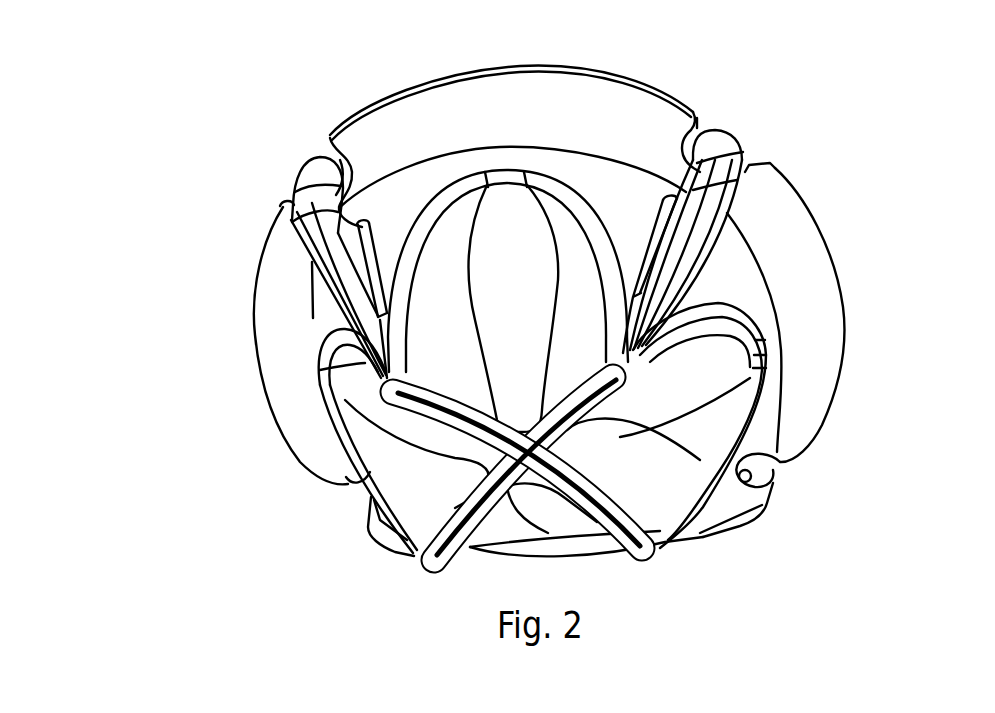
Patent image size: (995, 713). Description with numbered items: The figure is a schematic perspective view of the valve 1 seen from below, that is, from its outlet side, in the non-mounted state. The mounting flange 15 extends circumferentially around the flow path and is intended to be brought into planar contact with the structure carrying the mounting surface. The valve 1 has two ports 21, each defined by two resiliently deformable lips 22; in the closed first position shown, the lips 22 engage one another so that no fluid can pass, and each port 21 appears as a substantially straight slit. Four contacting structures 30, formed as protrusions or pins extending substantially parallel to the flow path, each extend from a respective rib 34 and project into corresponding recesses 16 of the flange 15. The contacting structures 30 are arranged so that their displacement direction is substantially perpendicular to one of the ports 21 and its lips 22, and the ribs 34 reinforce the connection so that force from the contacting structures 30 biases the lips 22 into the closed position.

The valve 1 is at (126, 78).
The flange 15 is at (817, 323).
The recess 16 is at (337, 172).
The port 21 is at (389, 409).
The lip 22 is at (446, 405).
The contacting structure 30 is at (542, 215).
The rib 34 is at (342, 237).